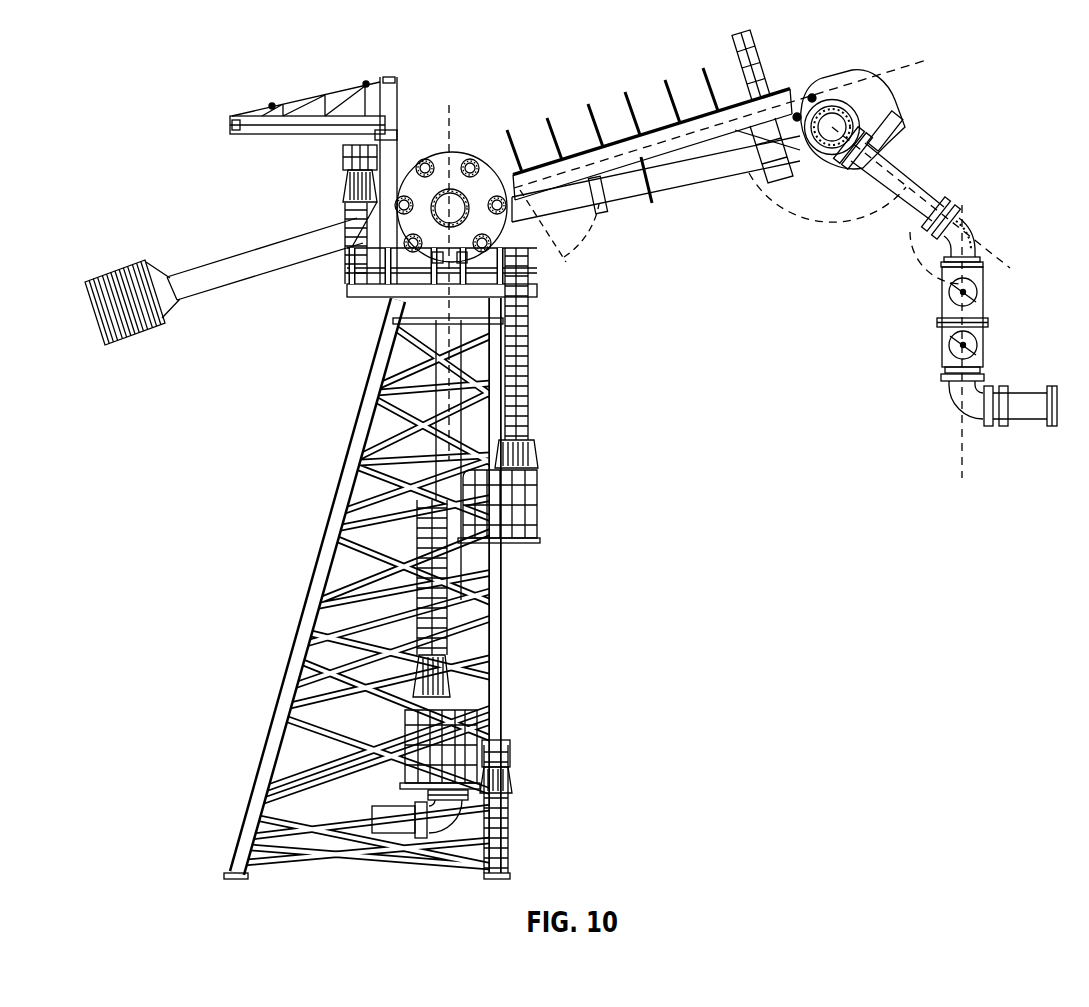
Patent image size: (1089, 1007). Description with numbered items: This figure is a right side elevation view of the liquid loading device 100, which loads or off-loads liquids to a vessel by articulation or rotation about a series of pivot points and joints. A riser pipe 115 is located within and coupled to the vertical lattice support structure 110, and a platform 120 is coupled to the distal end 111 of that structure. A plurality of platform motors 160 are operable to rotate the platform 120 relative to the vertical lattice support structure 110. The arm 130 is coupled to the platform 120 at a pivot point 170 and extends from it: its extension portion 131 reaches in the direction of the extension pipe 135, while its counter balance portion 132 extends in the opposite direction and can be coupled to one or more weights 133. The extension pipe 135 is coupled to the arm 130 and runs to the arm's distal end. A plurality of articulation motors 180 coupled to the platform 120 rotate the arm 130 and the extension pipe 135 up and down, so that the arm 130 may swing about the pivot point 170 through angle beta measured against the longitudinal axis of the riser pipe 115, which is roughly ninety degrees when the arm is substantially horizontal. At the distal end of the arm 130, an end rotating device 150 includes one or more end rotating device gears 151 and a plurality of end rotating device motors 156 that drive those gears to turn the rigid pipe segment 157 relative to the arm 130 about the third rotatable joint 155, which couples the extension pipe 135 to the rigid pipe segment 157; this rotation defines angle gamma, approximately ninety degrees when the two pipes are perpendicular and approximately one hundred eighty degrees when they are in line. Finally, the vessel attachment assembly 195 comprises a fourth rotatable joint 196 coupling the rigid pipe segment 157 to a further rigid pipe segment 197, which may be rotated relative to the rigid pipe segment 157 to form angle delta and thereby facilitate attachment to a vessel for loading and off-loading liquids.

The liquid loading device 100 is at (393, 68).
The vertical lattice support structure 110 is at (400, 492).
The distal end 111 is at (385, 339).
The riser pipe 115 is at (508, 396).
The platform 120 is at (394, 305).
The arm 130 is at (570, 151).
The extension portion 131 is at (706, 120).
The counter balance portion 132 is at (248, 262).
The weights 133 is at (122, 275).
The extension pipe 135 is at (683, 180).
The end rotating device 150 is at (891, 139).
The end rotating device gear 151 is at (846, 87).
The third rotatable joint 155 is at (866, 95).
The end rotating device motors 156 is at (800, 112).
The rigid pipe segment 157 is at (878, 125).
The platform motors 160 is at (503, 325).
The pivot point 170 is at (456, 205).
The articulation motors 180 is at (455, 188).
The vessel attachment assembly 195 is at (1012, 341).
The fourth rotatable joint 196 is at (975, 226).
The rigid pipe segment 197 is at (990, 355).